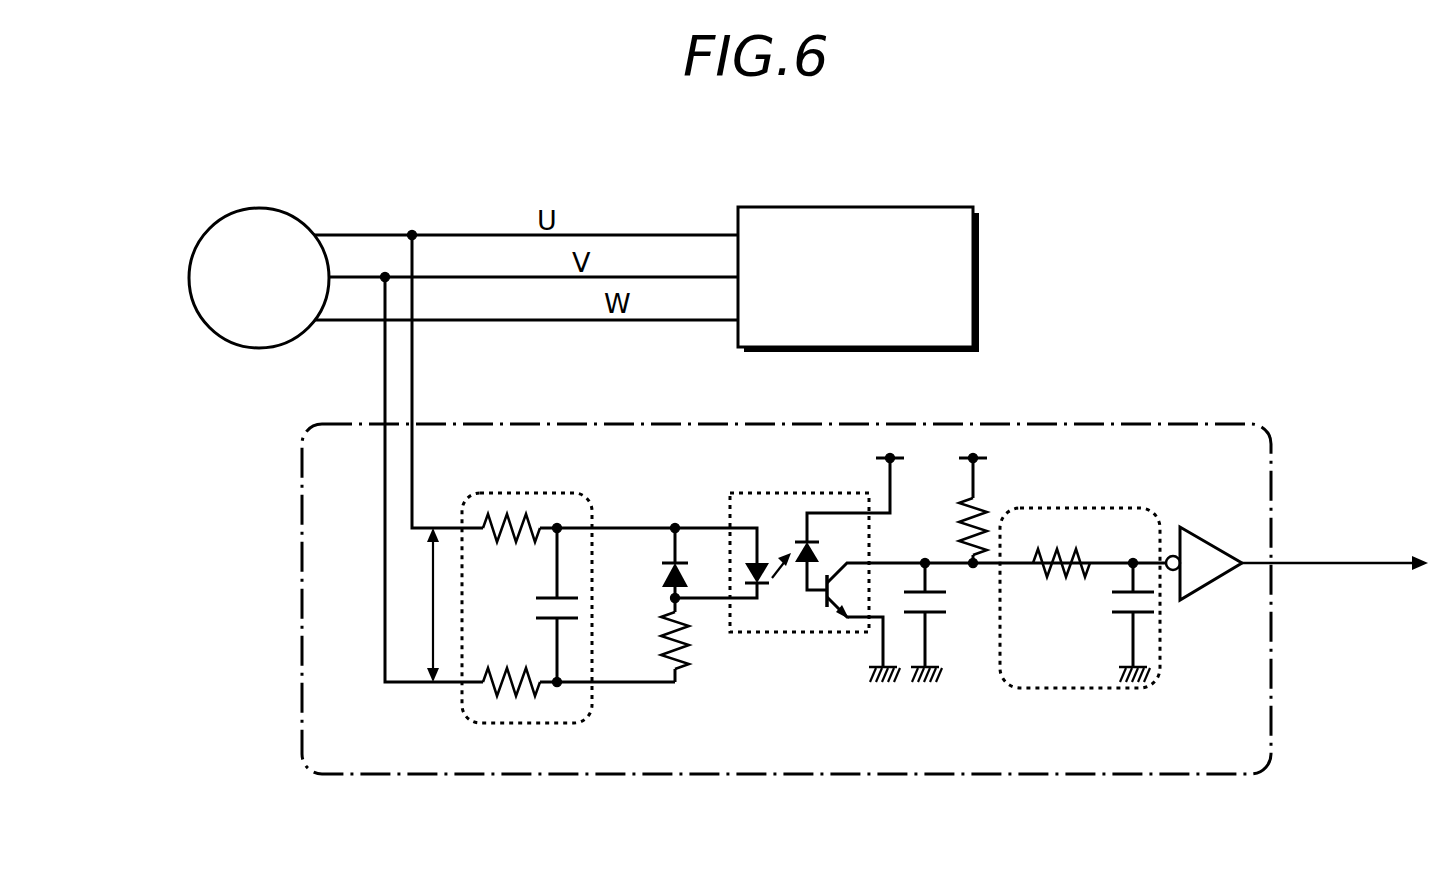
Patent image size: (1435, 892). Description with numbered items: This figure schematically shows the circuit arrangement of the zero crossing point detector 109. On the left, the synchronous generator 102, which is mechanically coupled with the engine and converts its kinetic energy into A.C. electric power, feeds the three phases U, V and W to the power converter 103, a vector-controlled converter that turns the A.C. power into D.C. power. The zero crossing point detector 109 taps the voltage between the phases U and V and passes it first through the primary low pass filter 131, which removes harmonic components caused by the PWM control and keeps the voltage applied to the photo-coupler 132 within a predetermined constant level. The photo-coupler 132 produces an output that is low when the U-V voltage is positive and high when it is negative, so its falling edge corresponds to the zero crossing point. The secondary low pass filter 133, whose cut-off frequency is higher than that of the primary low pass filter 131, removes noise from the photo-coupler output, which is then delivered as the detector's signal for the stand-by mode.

The synchronous generator 102 is at (262, 208).
The power converter 103 is at (979, 278).
The zero crossing point detector 109 is at (993, 423).
The primary low pass filter 131 is at (537, 490).
The photo-coupler 132 is at (772, 633).
The secondary low pass filter 133 is at (1025, 688).